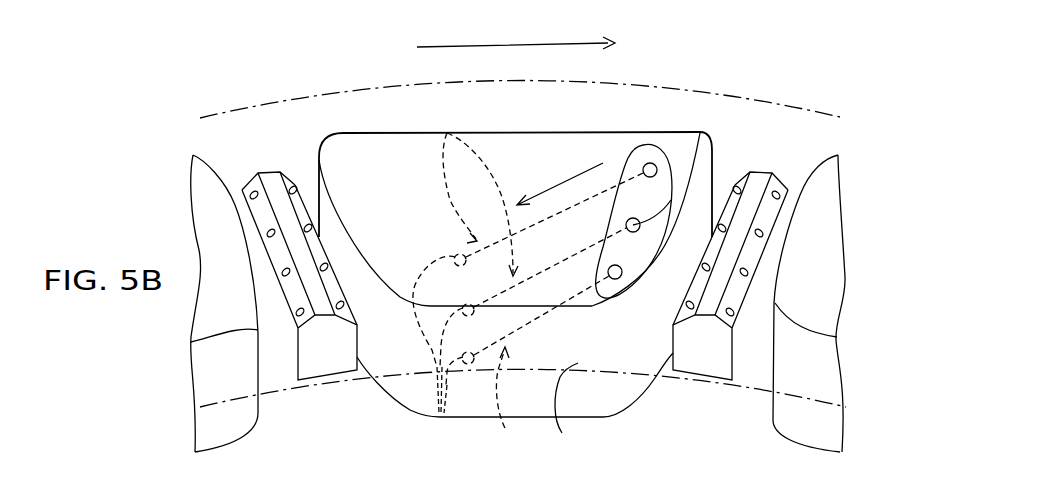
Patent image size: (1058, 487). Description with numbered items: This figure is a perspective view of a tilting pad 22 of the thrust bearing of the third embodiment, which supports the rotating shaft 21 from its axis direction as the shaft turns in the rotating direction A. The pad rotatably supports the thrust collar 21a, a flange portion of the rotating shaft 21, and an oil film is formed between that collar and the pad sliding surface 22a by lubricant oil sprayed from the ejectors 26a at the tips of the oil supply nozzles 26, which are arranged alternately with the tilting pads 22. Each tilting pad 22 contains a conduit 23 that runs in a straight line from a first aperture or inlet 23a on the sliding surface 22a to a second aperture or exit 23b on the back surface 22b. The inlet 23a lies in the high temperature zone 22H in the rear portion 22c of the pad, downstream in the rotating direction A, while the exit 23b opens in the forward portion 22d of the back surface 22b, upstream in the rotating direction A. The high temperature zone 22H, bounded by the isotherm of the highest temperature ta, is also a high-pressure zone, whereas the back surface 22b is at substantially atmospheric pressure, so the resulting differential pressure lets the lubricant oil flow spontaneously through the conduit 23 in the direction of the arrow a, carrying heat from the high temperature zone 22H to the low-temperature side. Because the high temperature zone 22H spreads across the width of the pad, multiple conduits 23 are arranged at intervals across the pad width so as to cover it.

The rotating shaft 21 is at (822, 395).
The thrust collar 21a is at (785, 108).
The tilting pad 22 is at (515, 261).
The sliding surface 22a is at (515, 199).
The back surface 22b is at (592, 418).
The rear portion 22c is at (615, 177).
The forward portion 22d is at (404, 207).
The high temperature zone 22H is at (628, 168).
The conduit 23 is at (450, 132).
The first aperture (inlet) 23a is at (657, 168).
The second aperture (exit) 23b is at (441, 413).
The oil supply nozzle 26 is at (265, 178).
The ejector 26a is at (251, 192).
The rotating direction A is at (516, 32).
The arrow a (oil flow direction) a is at (560, 184).
The temperature ta is at (564, 410).